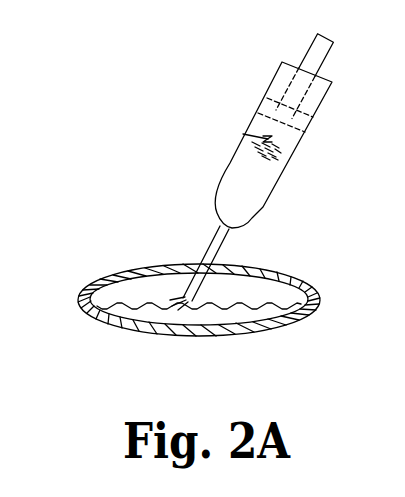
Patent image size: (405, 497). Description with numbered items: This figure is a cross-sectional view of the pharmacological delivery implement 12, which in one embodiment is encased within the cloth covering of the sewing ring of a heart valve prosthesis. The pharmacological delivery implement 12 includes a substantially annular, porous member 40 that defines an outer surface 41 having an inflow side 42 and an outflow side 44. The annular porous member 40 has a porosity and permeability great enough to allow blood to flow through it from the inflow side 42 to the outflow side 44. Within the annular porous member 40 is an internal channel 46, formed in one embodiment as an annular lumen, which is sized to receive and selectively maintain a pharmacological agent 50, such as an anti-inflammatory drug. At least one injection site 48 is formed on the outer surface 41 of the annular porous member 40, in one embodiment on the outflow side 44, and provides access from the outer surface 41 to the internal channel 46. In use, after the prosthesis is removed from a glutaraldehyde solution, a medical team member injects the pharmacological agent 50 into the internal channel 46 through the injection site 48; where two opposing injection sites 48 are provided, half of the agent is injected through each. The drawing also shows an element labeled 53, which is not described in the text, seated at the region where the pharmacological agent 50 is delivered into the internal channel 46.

The pharmacological delivery implement 12 is at (323, 260).
The annular porous member 40 is at (318, 297).
The outer surface 41 is at (312, 313).
The inflow side 42 is at (235, 332).
The outflow side 44 is at (284, 273).
The internal channel 46 is at (122, 297).
The injection site 48 is at (240, 262).
The pharmacological agent 50 is at (235, 180).
The dropper tip 53 is at (211, 243).